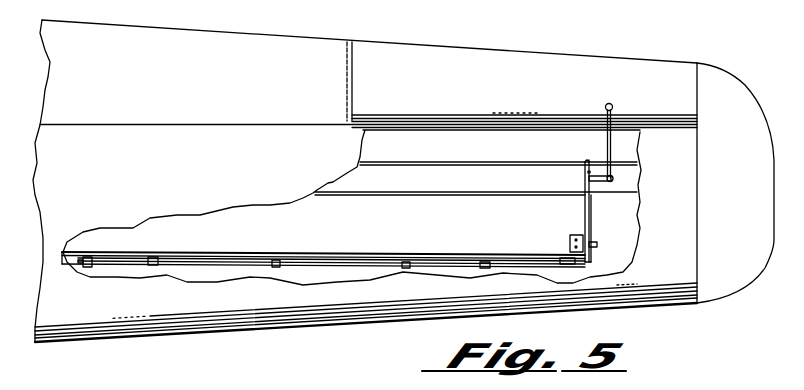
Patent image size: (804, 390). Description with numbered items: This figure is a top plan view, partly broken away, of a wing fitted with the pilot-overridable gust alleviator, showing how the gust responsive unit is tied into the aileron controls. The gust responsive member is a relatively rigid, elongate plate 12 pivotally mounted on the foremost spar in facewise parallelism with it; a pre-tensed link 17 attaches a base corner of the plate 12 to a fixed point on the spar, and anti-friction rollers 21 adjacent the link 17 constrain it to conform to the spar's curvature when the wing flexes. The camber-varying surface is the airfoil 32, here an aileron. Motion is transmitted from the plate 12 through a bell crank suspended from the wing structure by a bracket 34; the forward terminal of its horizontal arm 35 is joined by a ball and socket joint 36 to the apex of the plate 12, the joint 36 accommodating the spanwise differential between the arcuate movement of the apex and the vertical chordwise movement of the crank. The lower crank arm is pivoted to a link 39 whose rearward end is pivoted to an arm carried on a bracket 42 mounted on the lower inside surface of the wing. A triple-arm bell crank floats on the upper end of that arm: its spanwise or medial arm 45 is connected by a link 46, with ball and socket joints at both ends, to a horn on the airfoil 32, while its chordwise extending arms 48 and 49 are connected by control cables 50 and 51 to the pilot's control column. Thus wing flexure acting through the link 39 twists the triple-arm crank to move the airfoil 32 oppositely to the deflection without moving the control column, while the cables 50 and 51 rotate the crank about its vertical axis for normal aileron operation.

The plate 12 is at (527, 267).
The link 17 is at (217, 265).
The anti-friction rollers 21 is at (280, 267).
The airfoil 32 is at (549, 91).
The bracket 34 is at (565, 238).
The horizontal arm 35 is at (597, 246).
The ball and socket joint 36 is at (585, 262).
The link 39 is at (587, 218).
The bracket 42 is at (600, 175).
The medial arm 45 is at (612, 190).
The link 46 is at (613, 152).
The chordwise extending arm 48 is at (585, 182).
The chordwise extending arm 49 is at (605, 162).
The control cable 50 is at (413, 195).
The control cable 51 is at (425, 160).